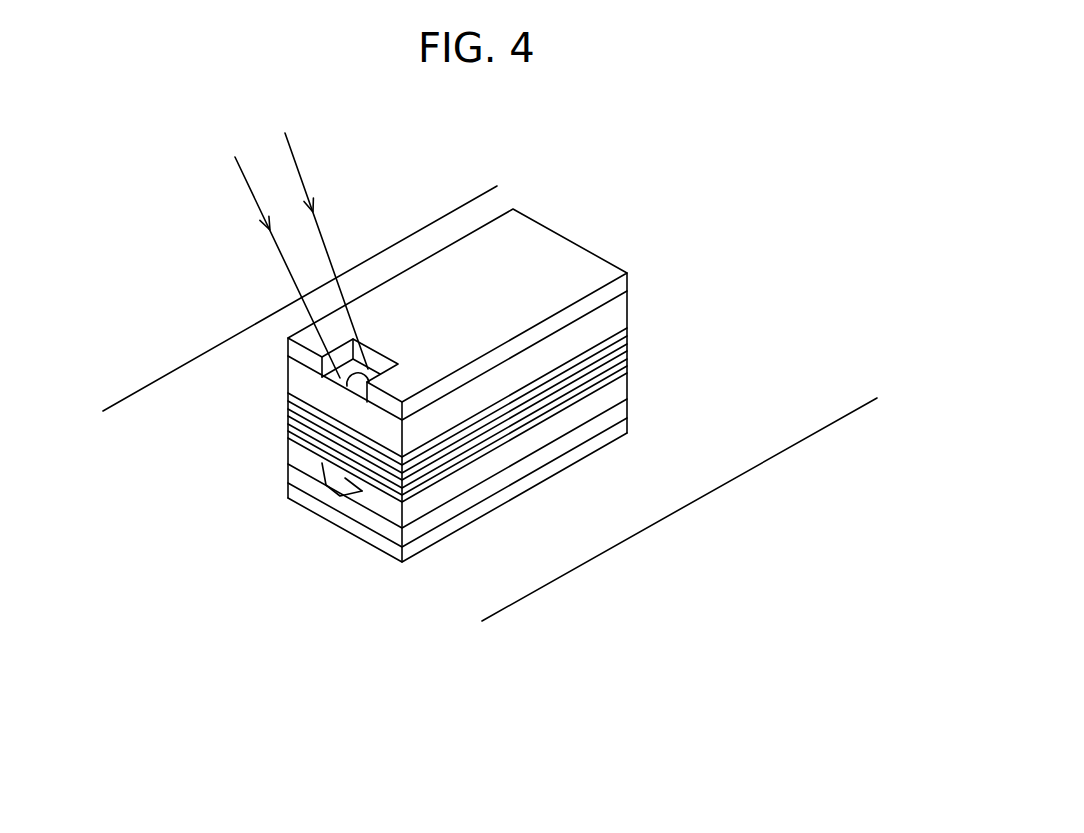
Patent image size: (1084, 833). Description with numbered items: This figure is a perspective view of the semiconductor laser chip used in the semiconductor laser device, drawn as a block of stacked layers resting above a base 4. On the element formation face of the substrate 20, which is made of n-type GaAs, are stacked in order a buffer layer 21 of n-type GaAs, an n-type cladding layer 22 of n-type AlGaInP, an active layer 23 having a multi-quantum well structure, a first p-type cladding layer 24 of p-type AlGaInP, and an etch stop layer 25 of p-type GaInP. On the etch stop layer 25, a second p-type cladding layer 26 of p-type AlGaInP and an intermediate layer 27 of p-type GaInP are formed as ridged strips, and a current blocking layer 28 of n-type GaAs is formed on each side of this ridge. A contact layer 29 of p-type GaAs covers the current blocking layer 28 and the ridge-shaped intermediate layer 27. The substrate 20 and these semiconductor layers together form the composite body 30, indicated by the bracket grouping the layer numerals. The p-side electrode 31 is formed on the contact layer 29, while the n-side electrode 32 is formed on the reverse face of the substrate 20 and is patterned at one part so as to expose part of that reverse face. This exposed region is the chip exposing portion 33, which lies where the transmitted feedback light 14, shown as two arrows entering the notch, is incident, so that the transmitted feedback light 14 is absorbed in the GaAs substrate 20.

The base plate 4 is at (598, 527).
The transmitted feedback light 14 is at (262, 150).
The substrate 20 is at (288, 377).
The buffer layer 21 is at (288, 405).
The n-type cladding layer 22 is at (288, 415).
The active layer 23 is at (288, 423).
The first p-type cladding layer 24 is at (288, 430).
The etch stop layer 25 is at (288, 437).
The second p-type cladding layer 26 is at (323, 468).
The intermediate layer 27 is at (340, 497).
The current blocking layer 28 is at (289, 447).
The contact layer 29 is at (375, 538).
The composite body 30 is at (213, 355).
The p-side electrode 31 is at (380, 552).
The n-side electrode 32 is at (543, 248).
The chip exposing portion 33 is at (337, 377).